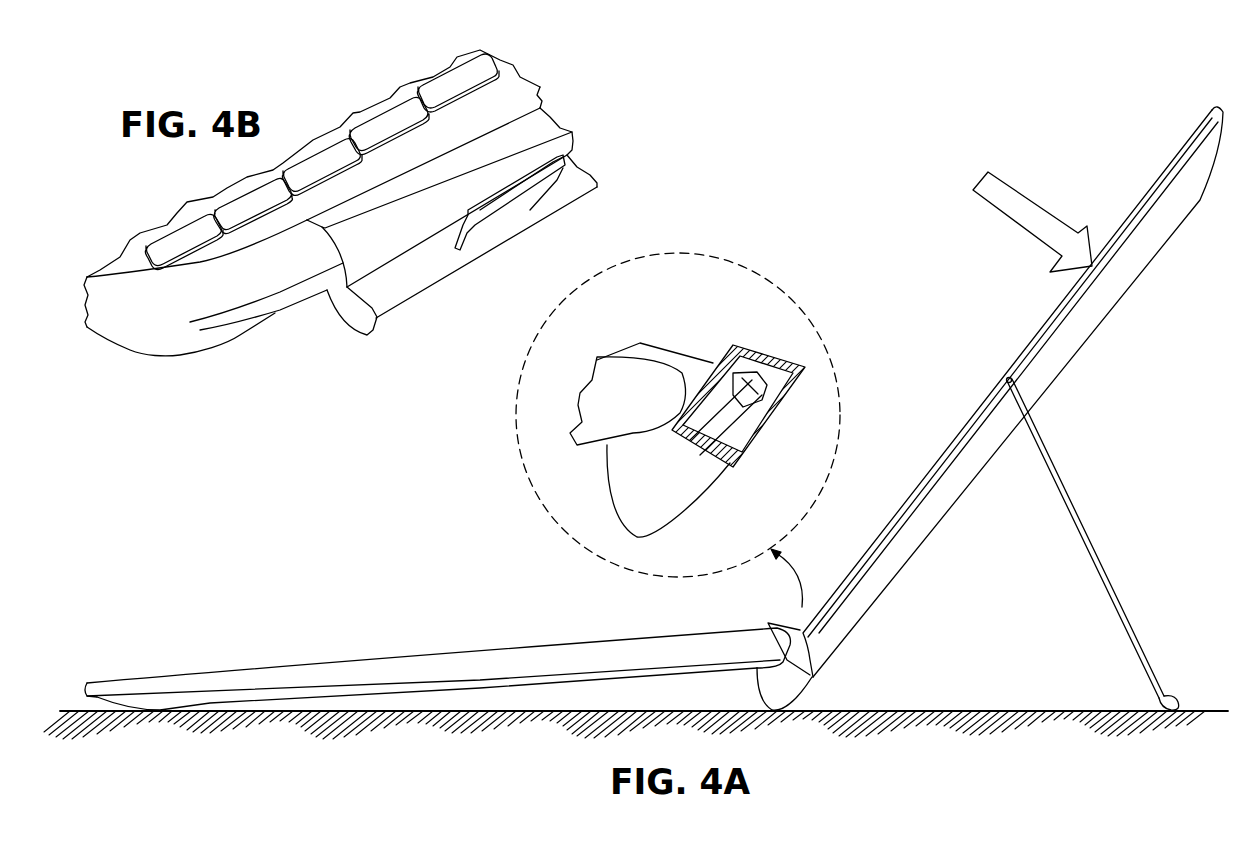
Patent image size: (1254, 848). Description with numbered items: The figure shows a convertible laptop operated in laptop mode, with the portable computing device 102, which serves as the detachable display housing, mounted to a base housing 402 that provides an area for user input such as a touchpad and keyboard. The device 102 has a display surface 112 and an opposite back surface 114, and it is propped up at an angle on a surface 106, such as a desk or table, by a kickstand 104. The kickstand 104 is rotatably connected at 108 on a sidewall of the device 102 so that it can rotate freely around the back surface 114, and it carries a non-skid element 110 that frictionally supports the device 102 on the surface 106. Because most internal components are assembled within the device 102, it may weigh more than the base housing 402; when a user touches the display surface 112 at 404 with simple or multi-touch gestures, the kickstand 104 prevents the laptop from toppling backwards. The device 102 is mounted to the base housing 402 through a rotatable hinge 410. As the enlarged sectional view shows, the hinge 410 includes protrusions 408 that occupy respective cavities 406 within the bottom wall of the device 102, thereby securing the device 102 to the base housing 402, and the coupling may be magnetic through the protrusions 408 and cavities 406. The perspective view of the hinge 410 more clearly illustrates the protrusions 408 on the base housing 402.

In FIG. 4A, the portable computing device 102 is at (881, 392).
In FIG. 4A, the kickstand 104 is at (1087, 535).
In FIG. 4A, the surface 106 is at (980, 710).
In FIG. 4A, the rotatable connection 108 is at (1005, 380).
In FIG. 4A, the non-skid element 110 is at (1170, 697).
In FIG. 4A, the display surface 112 is at (1058, 307).
In FIG. 4A, the back surface 114 is at (1097, 320).
In FIG. 4B, the base housing 402 is at (262, 330).
In FIG. 4A, the base housing 402 is at (478, 647).
In FIG. 4A, the touching the screen 404 is at (1037, 200).
In FIG. 4A, the cavity 406 is at (697, 447).
In FIG. 4B, the protrusion 408 is at (507, 217).
In FIG. 4A, the protrusion 408 is at (747, 370).
In FIG. 4B, the rotatable hinge 410 is at (433, 293).
In FIG. 4A, the rotatable hinge 410 is at (800, 693).